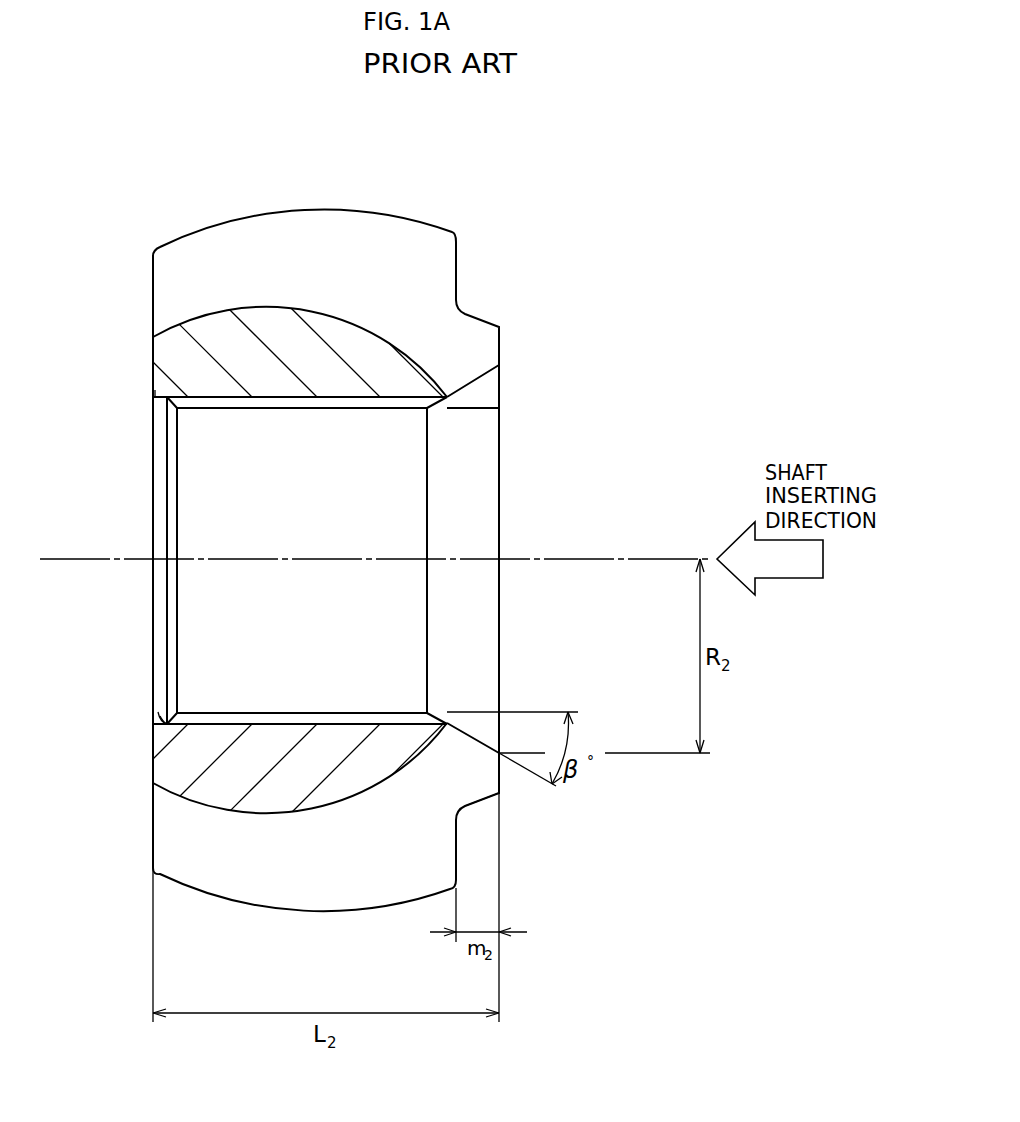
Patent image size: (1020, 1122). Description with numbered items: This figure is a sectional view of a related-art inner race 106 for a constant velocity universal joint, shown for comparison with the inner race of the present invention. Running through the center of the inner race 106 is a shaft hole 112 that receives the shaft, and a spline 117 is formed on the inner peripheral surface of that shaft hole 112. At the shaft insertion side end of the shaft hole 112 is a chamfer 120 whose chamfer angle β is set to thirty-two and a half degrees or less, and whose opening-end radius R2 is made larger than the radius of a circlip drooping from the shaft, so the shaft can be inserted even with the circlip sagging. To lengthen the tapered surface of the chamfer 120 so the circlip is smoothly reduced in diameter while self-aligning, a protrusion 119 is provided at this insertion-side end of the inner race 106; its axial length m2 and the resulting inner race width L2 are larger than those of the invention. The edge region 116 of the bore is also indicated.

The inner race 106 is at (132, 757).
The shaft hole 112 is at (205, 644).
The bore edge portion 116 is at (164, 724).
The spline 117 is at (260, 712).
The protrusion 119 is at (475, 793).
The chamfer 120 is at (497, 742).